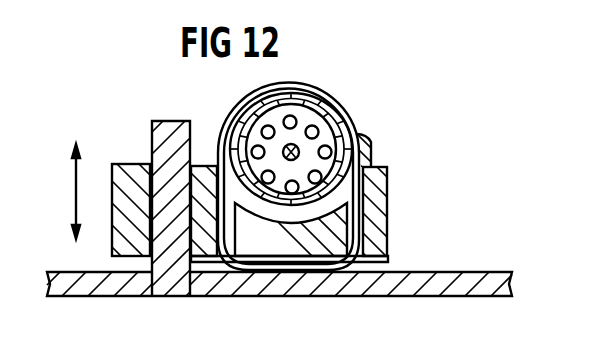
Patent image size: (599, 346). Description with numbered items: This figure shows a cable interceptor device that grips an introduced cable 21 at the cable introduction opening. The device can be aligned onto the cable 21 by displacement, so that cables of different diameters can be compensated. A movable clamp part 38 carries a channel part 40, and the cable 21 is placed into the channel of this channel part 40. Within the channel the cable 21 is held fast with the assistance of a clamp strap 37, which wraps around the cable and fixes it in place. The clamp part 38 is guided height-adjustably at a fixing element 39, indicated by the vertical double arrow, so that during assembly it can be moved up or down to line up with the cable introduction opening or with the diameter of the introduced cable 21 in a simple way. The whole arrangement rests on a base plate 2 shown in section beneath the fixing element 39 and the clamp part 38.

The base plate 2 is at (452, 283).
The cable 21 is at (306, 128).
The clamp strap 37 is at (347, 116).
The clamp part 38 is at (378, 185).
The fixing element 39 is at (171, 121).
The channel part 40 is at (325, 233).